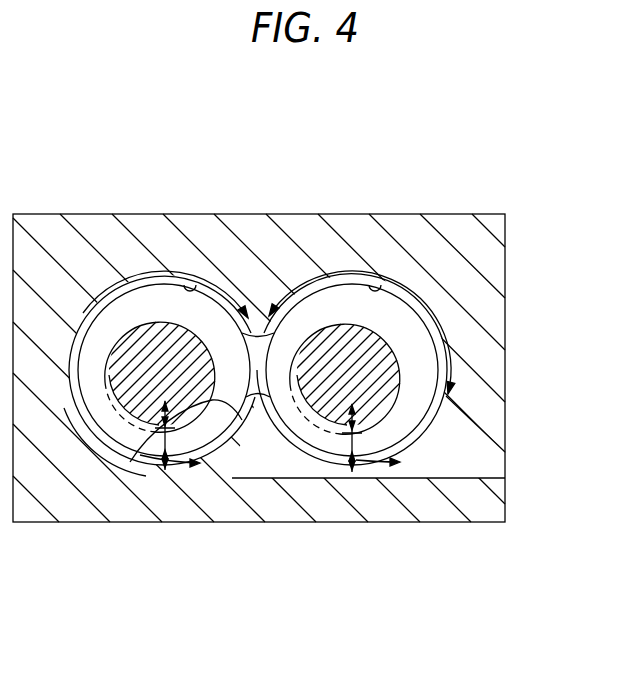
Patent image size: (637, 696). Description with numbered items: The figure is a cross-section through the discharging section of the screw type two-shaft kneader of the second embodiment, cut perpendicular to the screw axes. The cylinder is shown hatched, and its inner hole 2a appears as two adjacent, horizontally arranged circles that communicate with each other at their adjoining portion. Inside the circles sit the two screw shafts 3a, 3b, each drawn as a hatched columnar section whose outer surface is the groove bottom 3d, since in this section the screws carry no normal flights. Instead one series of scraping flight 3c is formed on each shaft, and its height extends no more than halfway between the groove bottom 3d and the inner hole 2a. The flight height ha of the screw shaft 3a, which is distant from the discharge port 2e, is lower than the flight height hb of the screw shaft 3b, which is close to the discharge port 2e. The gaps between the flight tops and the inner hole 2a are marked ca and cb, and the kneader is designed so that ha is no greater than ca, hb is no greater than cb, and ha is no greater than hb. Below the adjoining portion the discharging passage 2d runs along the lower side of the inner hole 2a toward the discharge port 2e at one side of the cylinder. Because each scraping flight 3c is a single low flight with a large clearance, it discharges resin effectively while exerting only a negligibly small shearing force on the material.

The inner hole 2a is at (203, 290).
The discharging passage 2d is at (263, 457).
The discharge port 2e is at (487, 432).
The screw shaft distant from the discharging port 3a is at (147, 300).
The screw shaft close to the discharging port 3b is at (333, 300).
The scraping flight 3c is at (74, 392).
The groove bottom 3d is at (258, 397).
The flight height of the screw distant from the discharging port ha is at (146, 442).
The flight height of the screw close to the discharging port hb is at (353, 474).
The gap between scraping flight top of screw 3a and inner hole ca is at (152, 457).
The gap between scraping flight top of screw 3b and inner hole cb is at (392, 468).